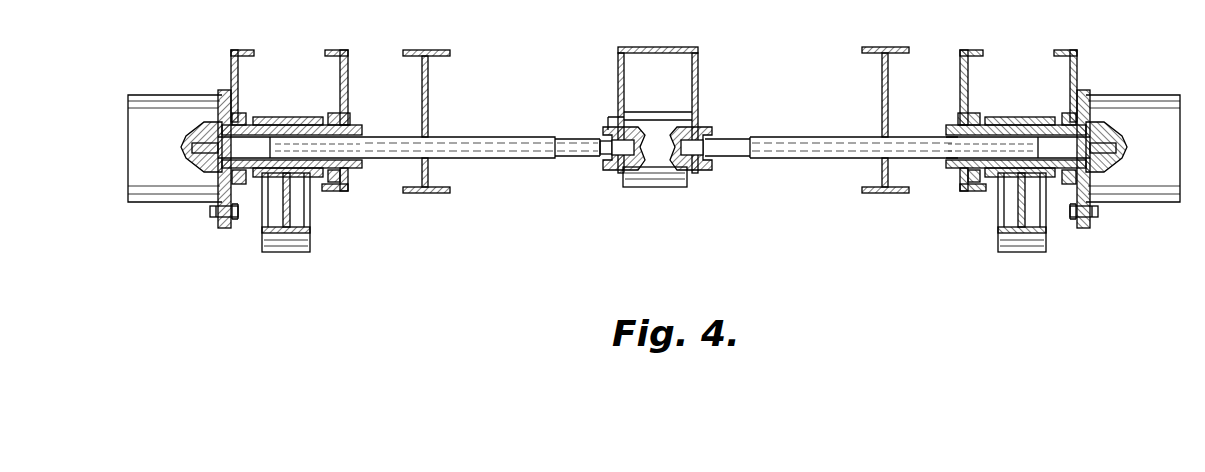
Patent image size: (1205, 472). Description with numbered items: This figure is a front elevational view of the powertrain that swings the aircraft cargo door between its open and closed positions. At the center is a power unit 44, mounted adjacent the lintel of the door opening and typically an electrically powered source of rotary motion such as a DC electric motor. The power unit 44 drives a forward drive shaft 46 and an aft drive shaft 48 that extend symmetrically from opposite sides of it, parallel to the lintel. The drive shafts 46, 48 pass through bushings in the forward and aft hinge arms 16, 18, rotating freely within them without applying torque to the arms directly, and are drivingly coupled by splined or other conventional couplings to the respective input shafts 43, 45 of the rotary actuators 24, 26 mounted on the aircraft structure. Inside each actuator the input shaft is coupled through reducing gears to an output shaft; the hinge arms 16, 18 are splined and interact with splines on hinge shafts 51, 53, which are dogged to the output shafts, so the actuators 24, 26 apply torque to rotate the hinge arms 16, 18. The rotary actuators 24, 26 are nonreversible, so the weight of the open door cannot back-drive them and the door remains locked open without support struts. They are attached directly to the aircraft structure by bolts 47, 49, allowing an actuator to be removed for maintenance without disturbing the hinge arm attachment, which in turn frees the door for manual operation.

The forward hinge arm 16 is at (1002, 222).
The aft hinge arm 18 is at (307, 213).
The rotary actuator 24 is at (1158, 197).
The rotary actuator 26 is at (155, 105).
The input shaft 43 is at (1117, 142).
The power unit 44 is at (655, 183).
The input shaft 45 is at (192, 160).
The forward drive shaft 46 is at (813, 153).
The bolt 47 is at (240, 212).
The aft drive shaft 48 is at (477, 137).
The bolt 49 is at (1097, 213).
The hinge shaft 51 is at (975, 187).
The hinge shaft 53 is at (353, 178).